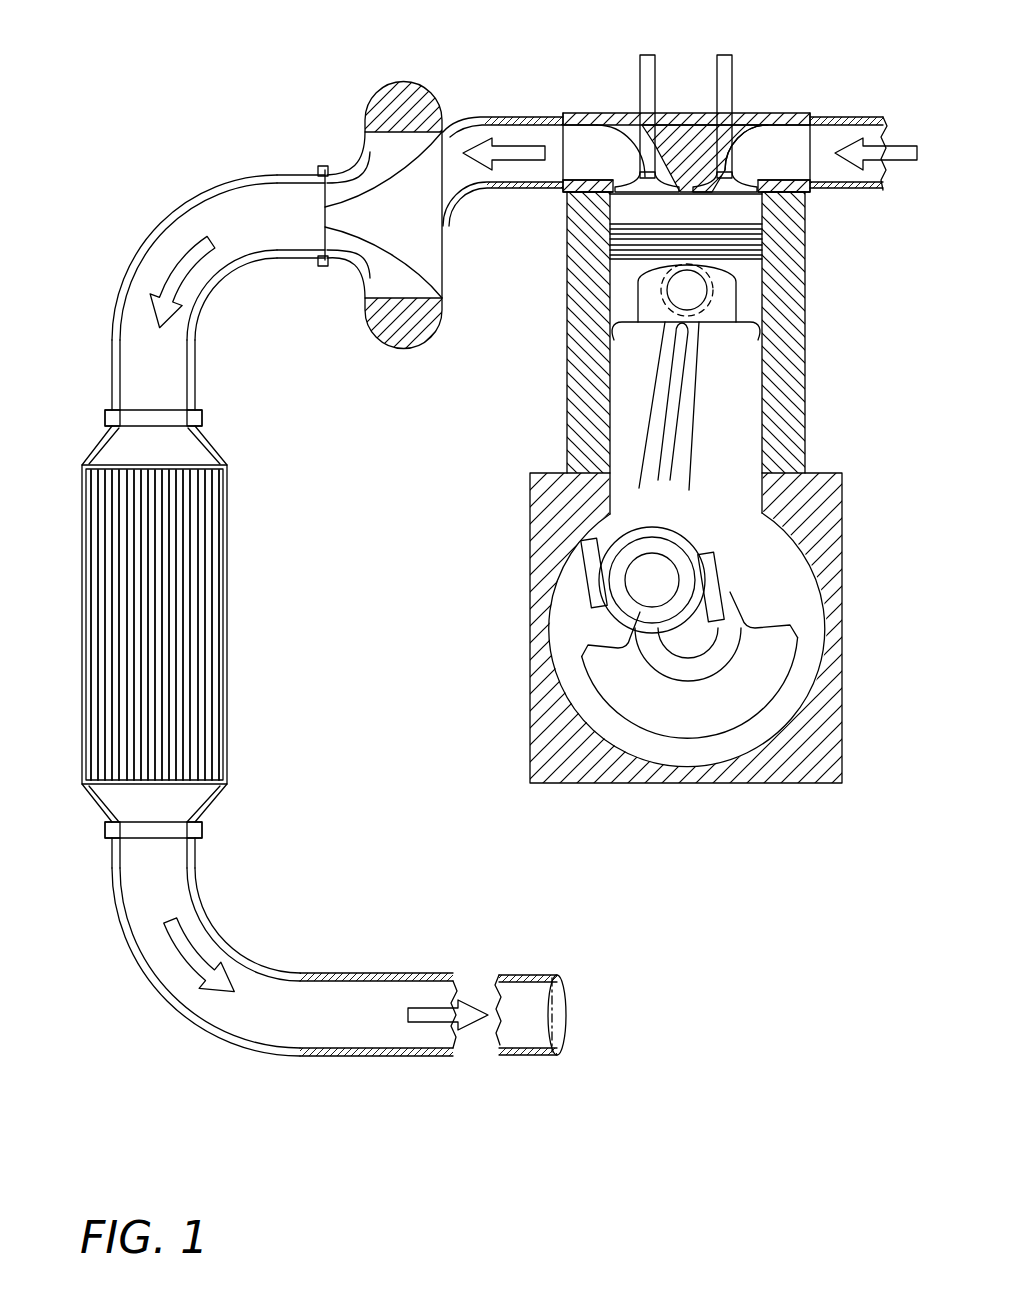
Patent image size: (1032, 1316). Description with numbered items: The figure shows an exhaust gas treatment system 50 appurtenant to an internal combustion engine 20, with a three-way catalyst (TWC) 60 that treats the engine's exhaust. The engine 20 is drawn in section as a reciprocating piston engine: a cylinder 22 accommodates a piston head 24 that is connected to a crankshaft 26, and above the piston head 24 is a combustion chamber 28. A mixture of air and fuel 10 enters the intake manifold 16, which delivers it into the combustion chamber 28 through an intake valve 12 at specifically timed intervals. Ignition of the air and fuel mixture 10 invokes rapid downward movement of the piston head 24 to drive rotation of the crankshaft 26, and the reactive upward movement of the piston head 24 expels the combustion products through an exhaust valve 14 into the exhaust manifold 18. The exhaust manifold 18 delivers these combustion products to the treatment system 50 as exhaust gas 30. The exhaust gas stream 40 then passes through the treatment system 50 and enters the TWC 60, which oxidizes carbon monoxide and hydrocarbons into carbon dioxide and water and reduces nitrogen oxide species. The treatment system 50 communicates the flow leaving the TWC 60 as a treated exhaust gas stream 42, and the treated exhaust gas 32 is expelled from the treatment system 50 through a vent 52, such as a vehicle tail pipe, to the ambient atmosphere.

The mixture of air and fuel 10 is at (897, 135).
The intake valve 12 is at (725, 167).
The exhaust valve 14 is at (645, 175).
The intake manifold 16 is at (847, 116).
The exhaust manifold 18 is at (548, 116).
The internal combustion engine 20 is at (805, 298).
The cylinder 22 is at (768, 426).
The piston head 24 is at (622, 302).
The crankshaft 26 is at (653, 581).
The combustion chamber 28 is at (768, 220).
The exhaust gas 30 is at (515, 125).
The treated exhaust gas 32 is at (427, 1022).
The exhaust gas stream 40 is at (178, 286).
The treated exhaust gas stream 42 is at (188, 960).
The exhaust gas treatment system 50 is at (155, 183).
The vent 52 is at (560, 1012).
The three-way catalyst 60 is at (78, 575).